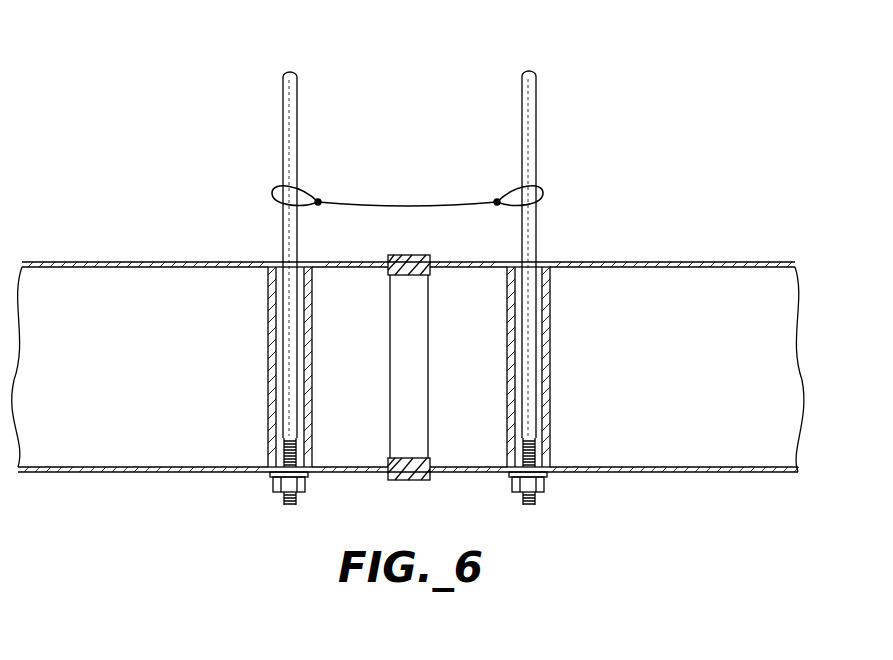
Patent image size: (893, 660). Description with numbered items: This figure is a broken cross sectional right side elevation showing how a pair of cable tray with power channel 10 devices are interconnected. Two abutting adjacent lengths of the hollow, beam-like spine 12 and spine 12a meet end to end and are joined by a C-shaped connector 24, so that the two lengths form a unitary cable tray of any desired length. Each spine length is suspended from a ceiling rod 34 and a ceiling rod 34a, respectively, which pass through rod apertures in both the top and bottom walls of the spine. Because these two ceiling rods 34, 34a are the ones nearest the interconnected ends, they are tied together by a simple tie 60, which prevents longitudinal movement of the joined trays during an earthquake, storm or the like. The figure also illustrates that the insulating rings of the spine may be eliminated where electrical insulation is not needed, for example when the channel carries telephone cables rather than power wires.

The cable tray with power channel 10 is at (718, 114).
The spine 12 is at (603, 262).
The spine 12a is at (100, 262).
The C-shaped connector 24 is at (412, 365).
The ceiling rod 34 is at (527, 124).
The ceiling rod 34a is at (287, 124).
The tie 60 is at (386, 203).